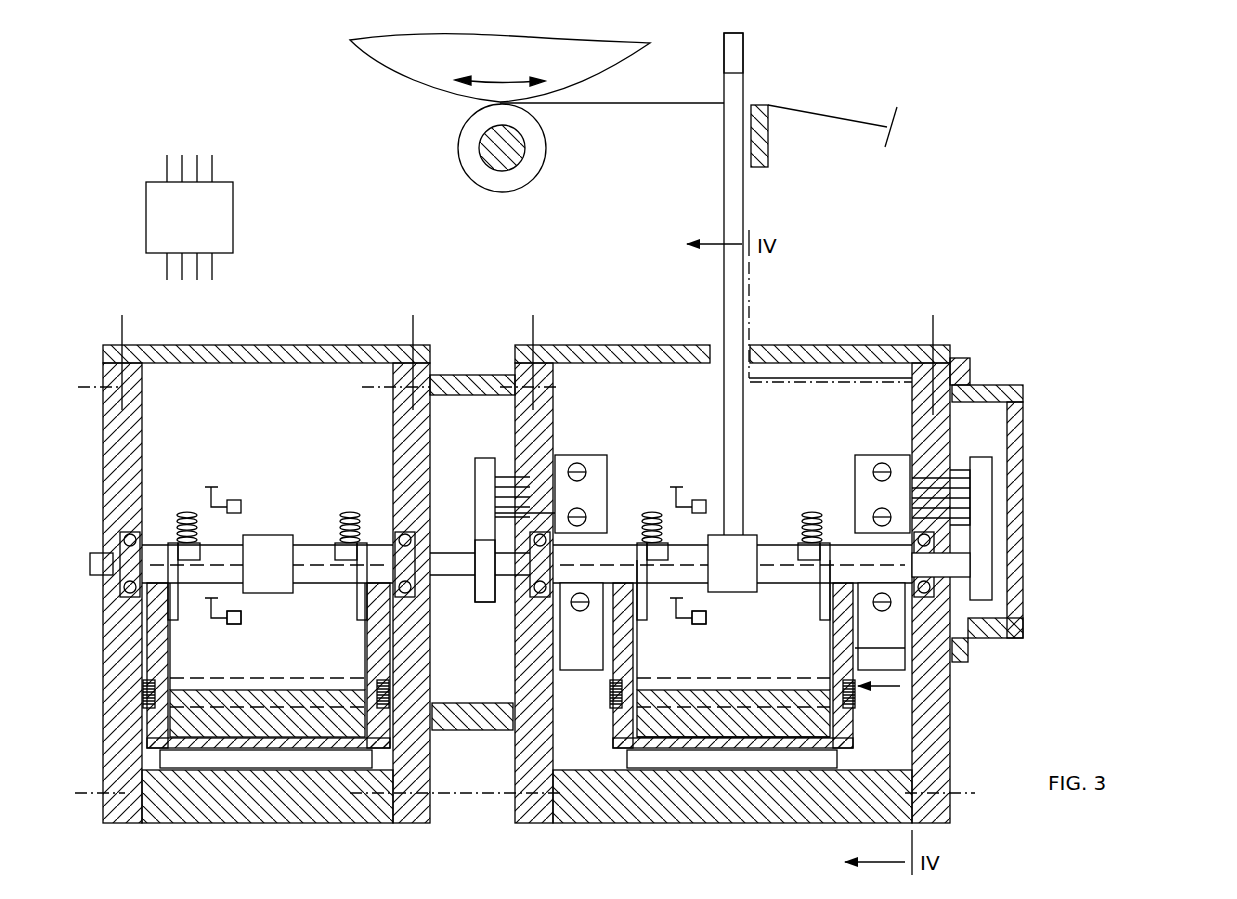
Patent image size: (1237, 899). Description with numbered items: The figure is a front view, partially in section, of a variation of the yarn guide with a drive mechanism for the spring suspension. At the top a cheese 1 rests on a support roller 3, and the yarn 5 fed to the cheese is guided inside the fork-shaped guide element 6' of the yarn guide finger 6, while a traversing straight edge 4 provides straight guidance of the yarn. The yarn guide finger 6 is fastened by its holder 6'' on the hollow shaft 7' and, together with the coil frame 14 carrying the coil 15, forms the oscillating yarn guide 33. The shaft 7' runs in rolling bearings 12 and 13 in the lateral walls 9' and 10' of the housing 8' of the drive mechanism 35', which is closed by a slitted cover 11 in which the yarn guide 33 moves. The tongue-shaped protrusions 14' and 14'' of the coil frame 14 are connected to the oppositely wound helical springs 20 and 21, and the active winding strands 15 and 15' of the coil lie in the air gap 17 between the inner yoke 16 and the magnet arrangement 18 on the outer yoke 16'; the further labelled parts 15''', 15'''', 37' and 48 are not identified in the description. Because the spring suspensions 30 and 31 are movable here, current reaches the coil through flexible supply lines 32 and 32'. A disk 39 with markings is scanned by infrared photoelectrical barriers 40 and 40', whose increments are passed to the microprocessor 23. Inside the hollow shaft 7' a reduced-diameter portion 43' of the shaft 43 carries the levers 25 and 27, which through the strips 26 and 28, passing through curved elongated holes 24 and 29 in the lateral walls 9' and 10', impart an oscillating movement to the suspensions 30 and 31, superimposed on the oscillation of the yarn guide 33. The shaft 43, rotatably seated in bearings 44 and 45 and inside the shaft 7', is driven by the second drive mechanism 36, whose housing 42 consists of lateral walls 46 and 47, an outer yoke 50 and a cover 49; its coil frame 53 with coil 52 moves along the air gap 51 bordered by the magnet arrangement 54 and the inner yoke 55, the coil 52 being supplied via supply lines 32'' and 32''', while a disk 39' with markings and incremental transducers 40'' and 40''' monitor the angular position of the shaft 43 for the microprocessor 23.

The cheese 1 is at (430, 72).
The support roller 3 is at (524, 170).
The traversing straight edge 4 is at (768, 140).
The yarn 5 is at (850, 120).
The yarn guide finger 6 is at (699, 297).
The fork-shaped guide element 6' is at (780, 53).
The holder 6'' is at (747, 530).
The shaft 7' is at (732, 518).
The housing 8' is at (995, 311).
The lateral wall 9' is at (983, 366).
The lateral wall 10' is at (514, 593).
The cover 11 is at (810, 348).
The rolling bearing 12 is at (930, 540).
The rolling bearing 13 is at (530, 598).
The coil frame 14 is at (799, 672).
The tongue-shaped protrusion 14' is at (810, 625).
The tongue-shaped protrusion 14'' is at (650, 625).
The coil 15 is at (922, 678).
The active winding strand 15' is at (733, 677).
The bolt 15''' is at (922, 696).
The bolt 15'''' is at (587, 718).
The inner yoke 16 is at (767, 707).
The outer yoke 16' is at (732, 821).
The air gap 17 is at (620, 757).
The magnet arrangement 18 is at (808, 765).
The helical spring 20 is at (893, 637).
The helical spring 21 is at (578, 664).
The microprocessor 23 is at (202, 228).
The curved elongated hole 24 is at (960, 500).
The lever 25 is at (985, 565).
The strip 26 is at (965, 482).
The lever 27 is at (480, 542).
The strip 28 is at (505, 500).
The curved elongated hole 29 is at (530, 492).
The suspension 30 is at (860, 460).
The suspension 31 is at (585, 462).
The flexible supply line 32 is at (817, 523).
The flexible supply line 32' is at (647, 542).
The supply line 32'' is at (359, 532).
The supply line 32''' is at (181, 532).
The yarn guide 33 is at (1020, 405).
The drive mechanism 35' is at (909, 247).
The drive mechanism 36 is at (295, 283).
The plate 37' is at (942, 645).
The disk 39 is at (709, 621).
The disk 39' is at (250, 609).
The infrared photoelectrical barrier 40 is at (691, 485).
The infrared photoelectrical barrier 40' is at (703, 640).
The incremental transducer 40'' is at (231, 482).
The incremental transducer 40''' is at (252, 636).
The housing 42 is at (366, 342).
The shaft 43 is at (241, 533).
The shaft portion 43' is at (480, 584).
The bearing 44 is at (125, 588).
The bearing 45 is at (408, 595).
The lateral wall 46 is at (122, 468).
The lateral wall 47 is at (420, 492).
The connecting piece 48 is at (475, 372).
The cover 49 is at (228, 347).
The outer yoke 50 is at (272, 805).
The air gap 51 is at (153, 757).
The coil 52 is at (145, 695).
The coil frame 53 is at (376, 750).
The magnet arrangement 54 is at (216, 752).
The inner yoke 55 is at (305, 718).